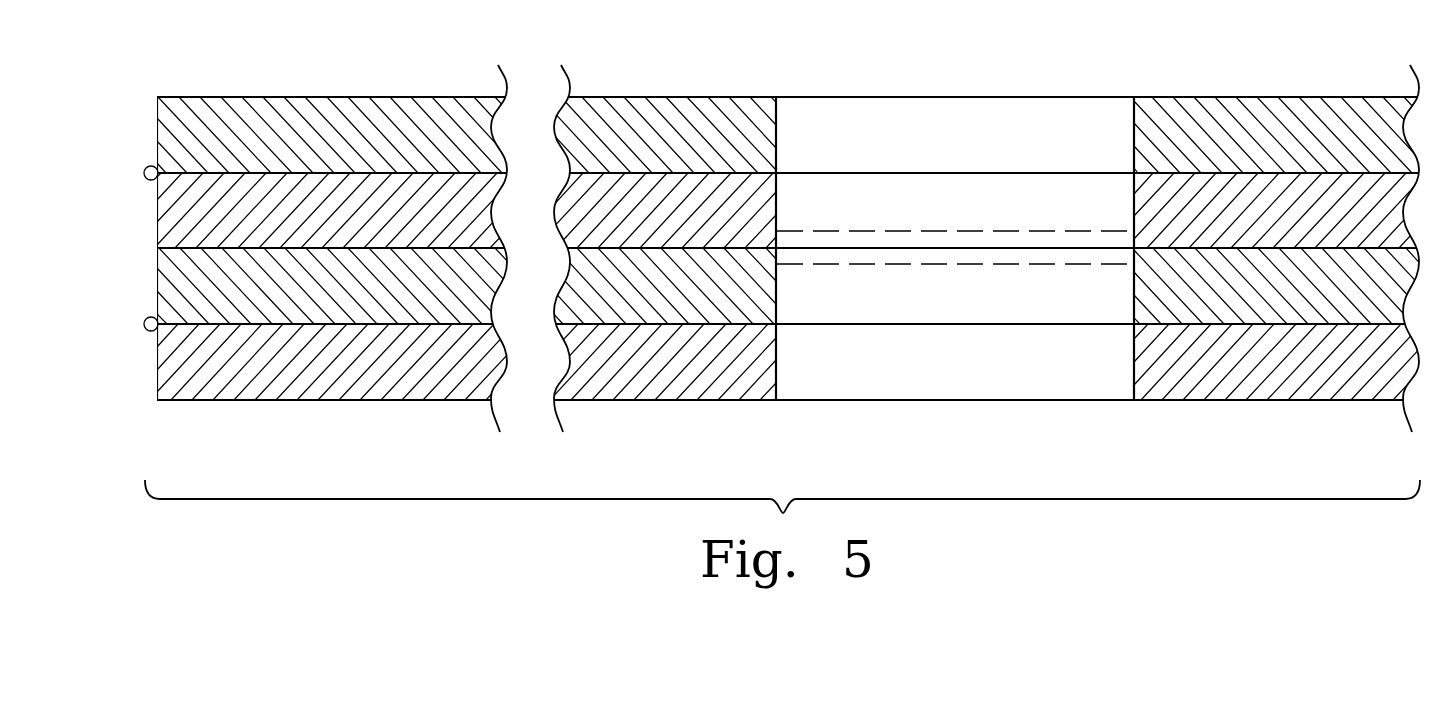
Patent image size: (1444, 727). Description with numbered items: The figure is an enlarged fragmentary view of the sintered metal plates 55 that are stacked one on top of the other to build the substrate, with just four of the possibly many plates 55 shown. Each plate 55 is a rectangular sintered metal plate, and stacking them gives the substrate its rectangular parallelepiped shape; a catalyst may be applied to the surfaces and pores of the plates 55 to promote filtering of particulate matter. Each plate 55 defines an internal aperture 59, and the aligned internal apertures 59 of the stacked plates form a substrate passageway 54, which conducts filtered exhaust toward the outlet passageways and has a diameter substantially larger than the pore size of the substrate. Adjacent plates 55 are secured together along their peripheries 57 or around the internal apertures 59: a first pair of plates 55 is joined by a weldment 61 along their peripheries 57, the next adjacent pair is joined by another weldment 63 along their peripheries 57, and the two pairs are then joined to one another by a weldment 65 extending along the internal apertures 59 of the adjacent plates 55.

The substrate passageway 54 is at (925, 128).
The sintered metal plate 55 is at (298, 123).
The periphery 57 is at (157, 129).
The internal aperture 59 is at (815, 123).
The weldment 61 is at (144, 326).
The weldment 63 is at (144, 174).
The weldment 65 is at (880, 231).